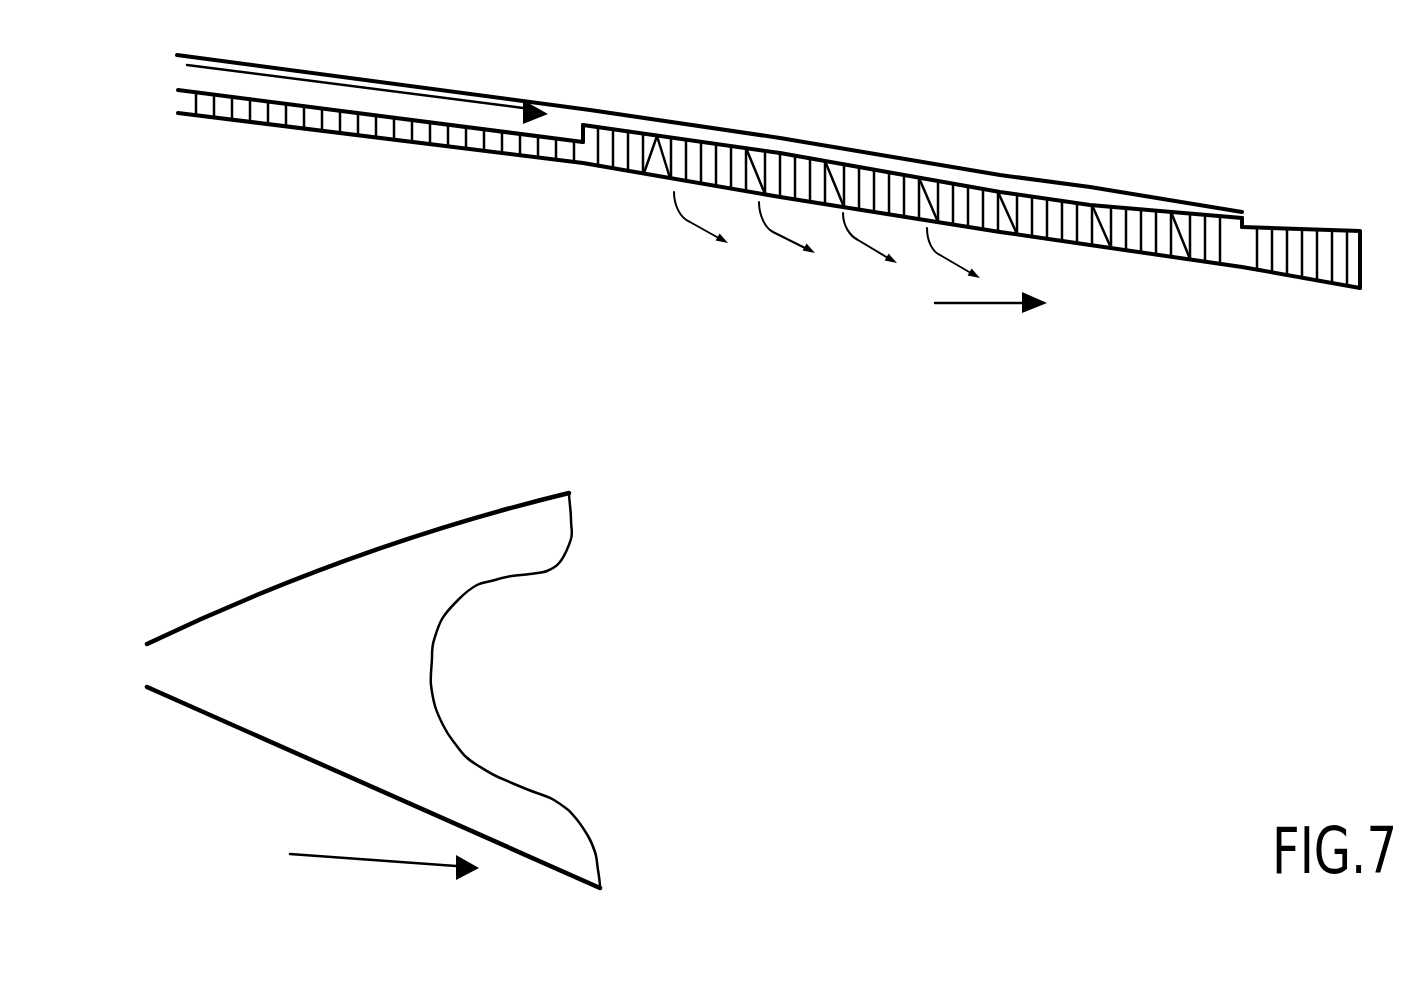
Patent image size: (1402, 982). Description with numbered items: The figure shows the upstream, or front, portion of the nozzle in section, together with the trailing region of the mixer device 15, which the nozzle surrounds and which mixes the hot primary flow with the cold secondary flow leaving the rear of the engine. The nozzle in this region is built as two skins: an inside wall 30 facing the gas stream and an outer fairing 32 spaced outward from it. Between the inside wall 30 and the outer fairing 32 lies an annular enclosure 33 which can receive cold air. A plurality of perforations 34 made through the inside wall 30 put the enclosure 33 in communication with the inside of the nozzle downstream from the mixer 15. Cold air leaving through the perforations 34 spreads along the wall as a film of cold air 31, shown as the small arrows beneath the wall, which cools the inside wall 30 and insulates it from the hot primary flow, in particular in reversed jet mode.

The mixer device 15 is at (411, 581).
The inside wall 30 is at (1247, 270).
The film of cold air 31 is at (858, 240).
The outer fairing 32 is at (968, 165).
The annular enclosure 33 is at (781, 148).
The perforations 34 is at (654, 153).